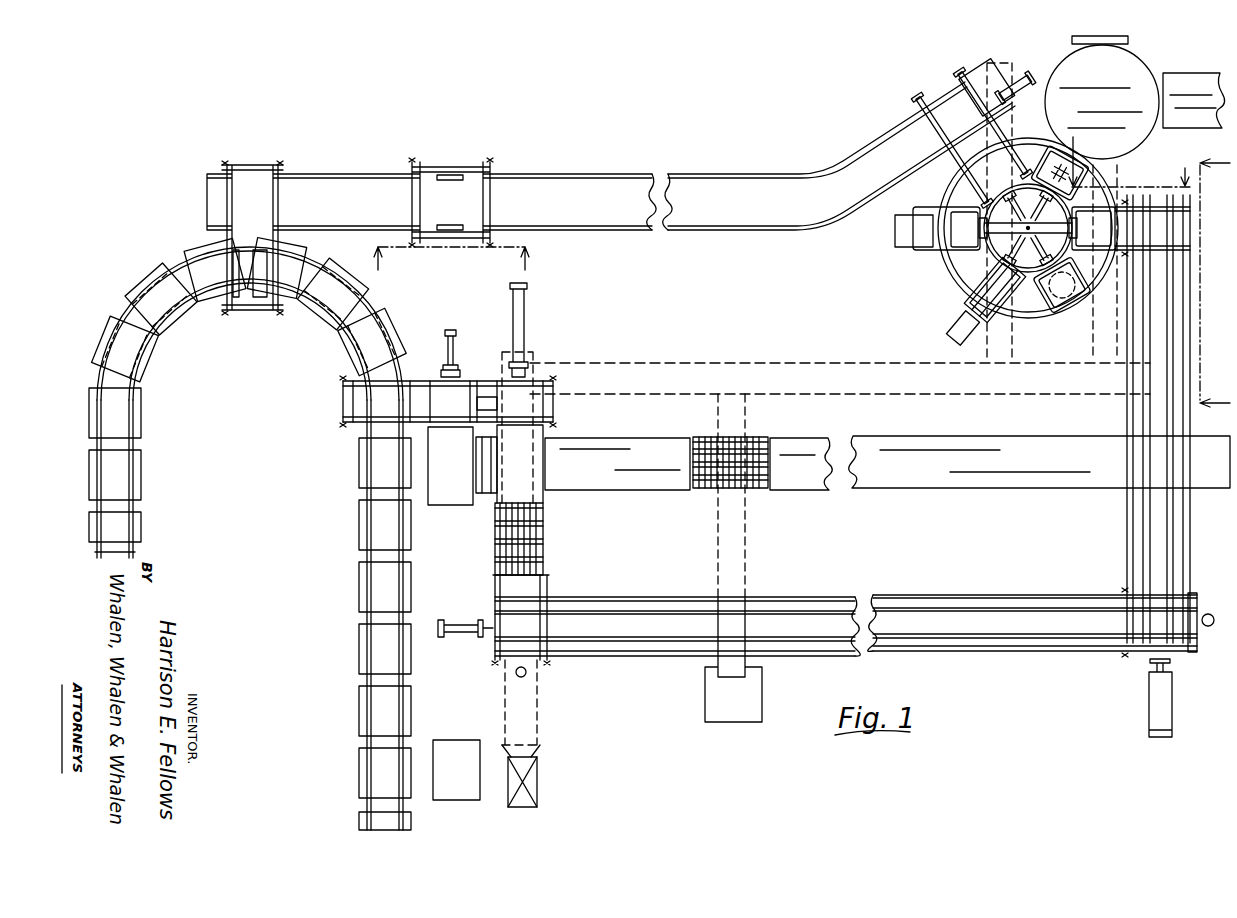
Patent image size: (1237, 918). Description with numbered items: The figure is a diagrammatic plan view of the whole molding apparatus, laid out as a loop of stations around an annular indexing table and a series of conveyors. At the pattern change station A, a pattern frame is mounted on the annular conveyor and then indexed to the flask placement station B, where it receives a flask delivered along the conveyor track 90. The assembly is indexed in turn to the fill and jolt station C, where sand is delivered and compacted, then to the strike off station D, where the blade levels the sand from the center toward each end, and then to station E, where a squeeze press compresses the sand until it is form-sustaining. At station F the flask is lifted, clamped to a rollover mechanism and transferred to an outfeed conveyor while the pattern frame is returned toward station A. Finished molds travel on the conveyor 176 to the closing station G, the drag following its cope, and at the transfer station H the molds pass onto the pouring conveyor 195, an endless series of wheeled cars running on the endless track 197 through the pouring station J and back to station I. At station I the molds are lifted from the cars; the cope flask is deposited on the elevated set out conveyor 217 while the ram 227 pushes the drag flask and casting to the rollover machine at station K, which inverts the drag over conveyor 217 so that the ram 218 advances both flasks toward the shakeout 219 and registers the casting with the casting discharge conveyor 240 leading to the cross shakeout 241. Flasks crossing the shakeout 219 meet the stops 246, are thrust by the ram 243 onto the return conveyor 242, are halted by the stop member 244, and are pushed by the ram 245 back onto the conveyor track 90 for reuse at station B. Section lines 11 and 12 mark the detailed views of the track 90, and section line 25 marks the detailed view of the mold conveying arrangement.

The section line 11- 11 is at (1218, 273).
The section line 12- 12 is at (1125, 152).
The section line 25- 25 is at (466, 264).
The conveyor track 90 is at (1140, 405).
The conveyor 176 is at (822, 228).
The pouring conveyor 195 is at (145, 360).
The endless track 197 is at (142, 554).
The set out conveyor 217 is at (548, 439).
The ram 218 is at (527, 322).
The shakeout 219 is at (546, 515).
The ram 227 is at (456, 342).
The casting discharge conveyor 240 is at (669, 487).
The cross shakeout 241 is at (760, 437).
The return conveyor 242 is at (655, 598).
The ram 243 is at (466, 615).
The stop member 244 is at (1207, 612).
The ram 245 is at (1173, 702).
The stops 246 is at (527, 674).
The pattern change station A is at (1061, 166).
The flask placement station B is at (1131, 228).
The fill and jolt station C is at (1062, 296).
The strike off station D is at (983, 301).
The squeeze press station E is at (928, 228).
The rollover and transfer station F is at (973, 134).
The closing station G is at (451, 202).
The transfer station H is at (252, 238).
The return station I is at (448, 401).
The pouring station J is at (456, 770).
The rollover machine station K is at (462, 466).